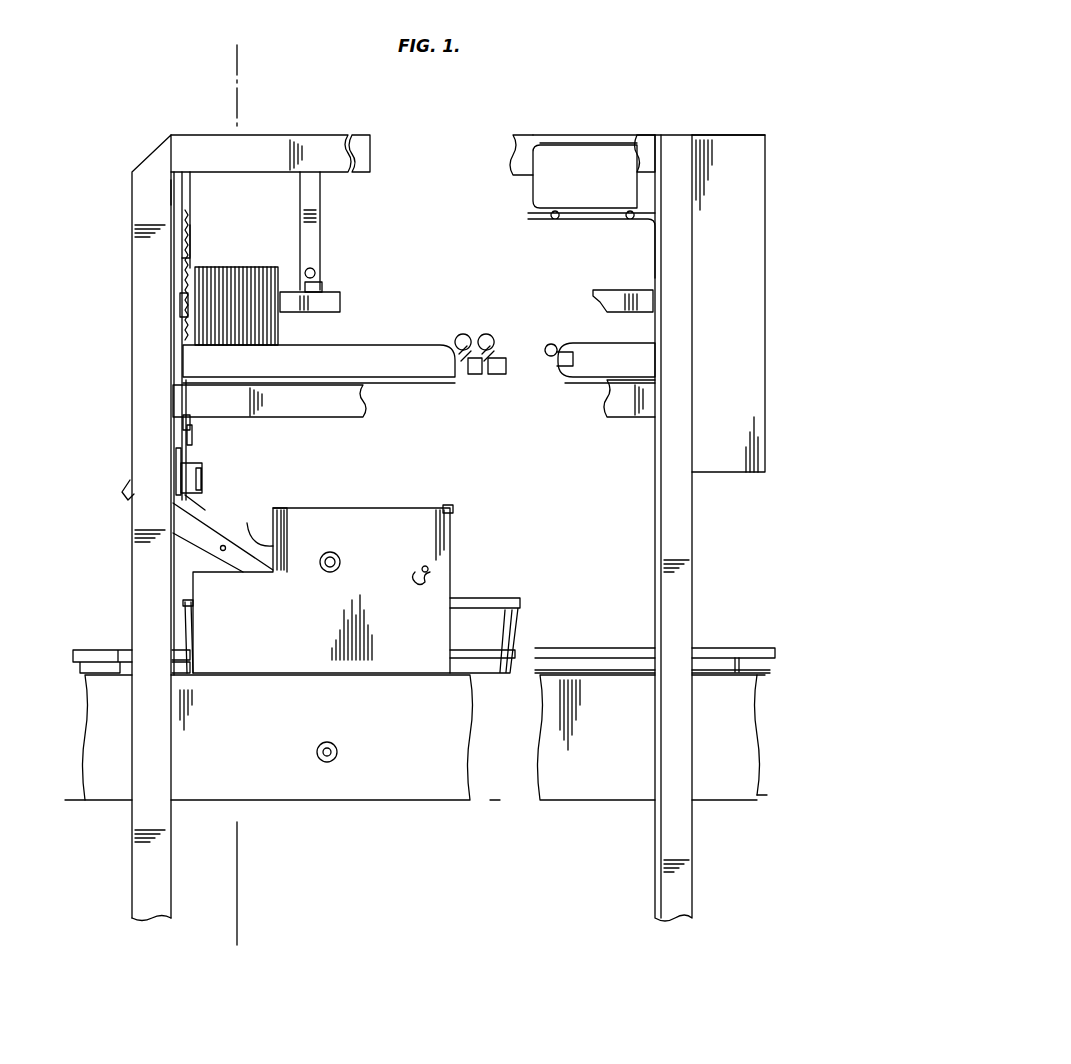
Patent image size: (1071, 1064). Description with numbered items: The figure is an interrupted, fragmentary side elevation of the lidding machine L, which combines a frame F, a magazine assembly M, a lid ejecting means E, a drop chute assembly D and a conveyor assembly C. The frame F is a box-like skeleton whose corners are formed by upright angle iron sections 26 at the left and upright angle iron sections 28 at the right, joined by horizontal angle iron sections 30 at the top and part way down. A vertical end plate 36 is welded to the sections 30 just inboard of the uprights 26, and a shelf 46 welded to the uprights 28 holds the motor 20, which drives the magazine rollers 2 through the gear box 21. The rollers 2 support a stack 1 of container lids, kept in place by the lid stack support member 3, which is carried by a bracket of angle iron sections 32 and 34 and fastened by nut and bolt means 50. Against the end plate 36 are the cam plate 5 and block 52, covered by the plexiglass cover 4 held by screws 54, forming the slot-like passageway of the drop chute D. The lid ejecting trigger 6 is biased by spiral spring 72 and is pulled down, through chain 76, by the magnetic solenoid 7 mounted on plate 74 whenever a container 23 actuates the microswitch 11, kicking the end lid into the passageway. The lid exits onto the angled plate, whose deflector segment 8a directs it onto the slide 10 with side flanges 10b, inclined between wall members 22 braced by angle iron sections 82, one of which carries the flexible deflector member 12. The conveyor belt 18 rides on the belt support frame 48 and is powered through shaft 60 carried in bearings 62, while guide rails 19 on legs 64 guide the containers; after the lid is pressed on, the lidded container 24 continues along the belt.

The stack of container lids 1 is at (258, 278).
The magazine rollers 2 is at (240, 52).
The lid stack support member 3 is at (338, 302).
The plexiglass cover 4 is at (191, 258).
The cam plate 5 is at (186, 190).
The lid ejecting trigger 6 is at (180, 302).
The magnetic solenoid 7 is at (203, 483).
The deflector segment 8a is at (205, 504).
The slide 10 is at (200, 548).
The upstanding side flanges 10b is at (124, 496).
The microswitch 11 is at (100, 655).
The flexible deflector member 12 is at (270, 536).
The conveyor belt 18 is at (72, 800).
The guide rails 19 is at (720, 652).
The motor 20 is at (649, 171).
The gear box 21 is at (728, 303).
The wall members 22 is at (321, 590).
The unlidded container 23 is at (194, 605).
The lidded container 24 is at (485, 635).
The upright angle iron sections 26 is at (150, 325).
The upright angle iron sections 28 is at (680, 530).
The horizontal angle iron sections 30 is at (330, 135).
The angle iron section 32 is at (321, 192).
The angle iron section 34 is at (322, 290).
The end plate 36 is at (171, 192).
The shelf 46 is at (590, 222).
The conveyor belt support frame 48 is at (421, 737).
The nut and bolt means 50 is at (318, 284).
The block 52 is at (185, 420).
The screws 54 is at (190, 255).
The shaft 60 is at (324, 748).
The bearings 62 is at (324, 754).
The legs 64 is at (737, 672).
The spiral spring 72 is at (183, 268).
The plate 74 is at (176, 481).
The chain 76 is at (183, 358).
The angle iron sections 82 is at (287, 510).
The frame F is at (212, 125).
The lidding machine L is at (558, 88).
The magazine assembly M is at (443, 332).
The lid ejecting means E is at (160, 452).
The drop chute assembly D is at (215, 468).
The conveyor assembly C is at (545, 620).